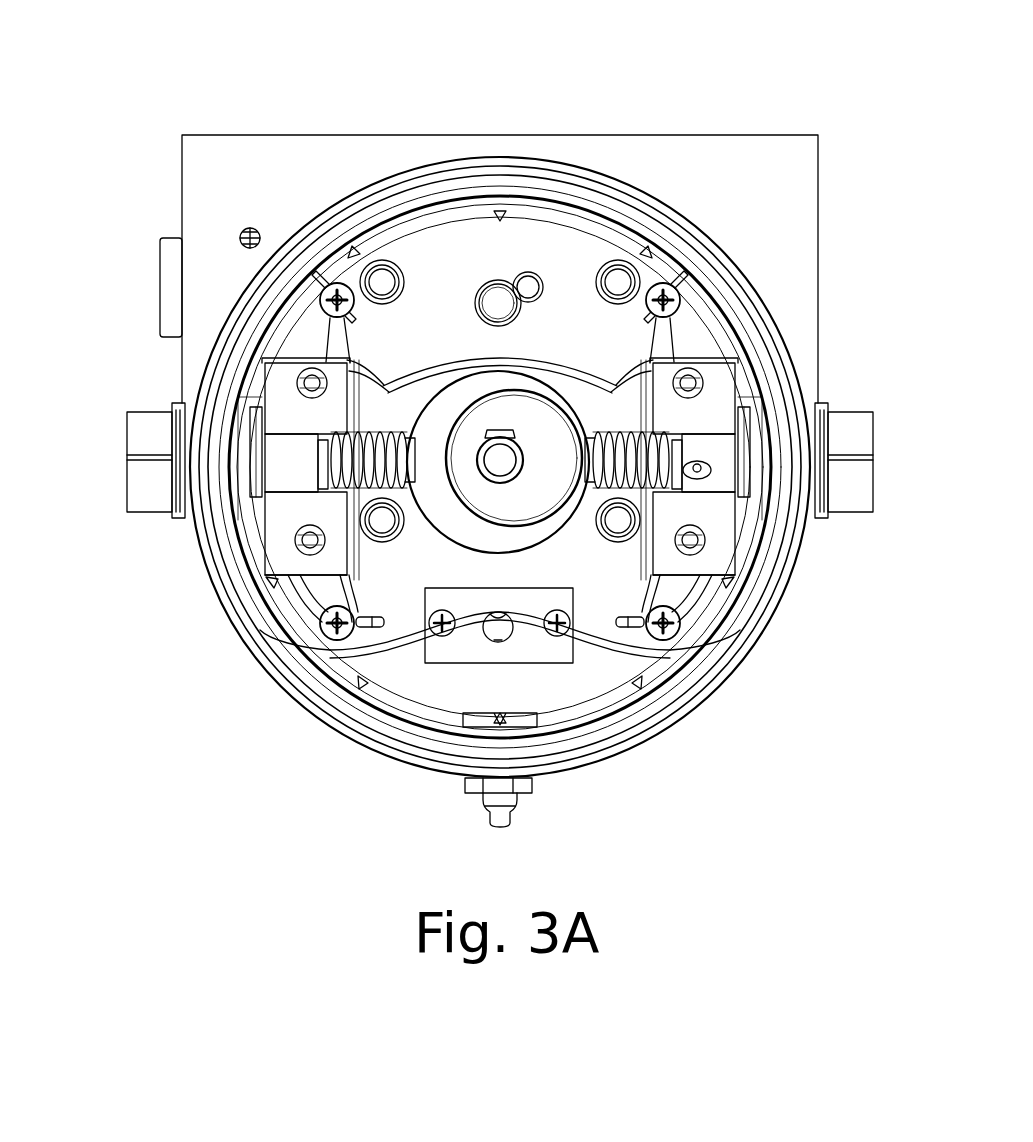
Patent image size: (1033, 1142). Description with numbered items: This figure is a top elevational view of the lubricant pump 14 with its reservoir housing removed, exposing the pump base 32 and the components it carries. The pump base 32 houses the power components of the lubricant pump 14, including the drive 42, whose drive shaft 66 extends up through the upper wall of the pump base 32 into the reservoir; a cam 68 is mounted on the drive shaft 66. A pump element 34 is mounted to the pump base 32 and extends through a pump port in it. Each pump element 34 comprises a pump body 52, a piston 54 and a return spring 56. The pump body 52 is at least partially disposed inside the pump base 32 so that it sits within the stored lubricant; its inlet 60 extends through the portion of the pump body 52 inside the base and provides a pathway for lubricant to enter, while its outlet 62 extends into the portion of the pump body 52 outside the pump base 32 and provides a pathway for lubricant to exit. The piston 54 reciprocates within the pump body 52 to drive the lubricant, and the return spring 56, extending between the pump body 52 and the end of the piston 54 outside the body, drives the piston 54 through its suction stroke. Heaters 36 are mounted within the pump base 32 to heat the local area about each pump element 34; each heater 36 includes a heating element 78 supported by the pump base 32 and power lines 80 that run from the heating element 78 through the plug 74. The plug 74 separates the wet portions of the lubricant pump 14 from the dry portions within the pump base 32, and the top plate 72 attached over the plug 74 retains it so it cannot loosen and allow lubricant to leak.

The lubricant pump 14 is at (194, 677).
The pump base 32 is at (797, 392).
The pump element 34 is at (323, 425).
The heater 36 is at (263, 532).
The drive 42 is at (452, 370).
The pump body 52 is at (290, 455).
The piston 54 is at (372, 428).
The return spring 56 is at (368, 408).
The inlet 60 is at (294, 442).
The outlet 62 is at (128, 452).
The drive shaft 66 is at (548, 438).
The cam 68 is at (501, 456).
The top plate 72 is at (516, 655).
The plug 74 is at (497, 632).
The heating element 78 is at (281, 562).
The power line 80 is at (380, 658).